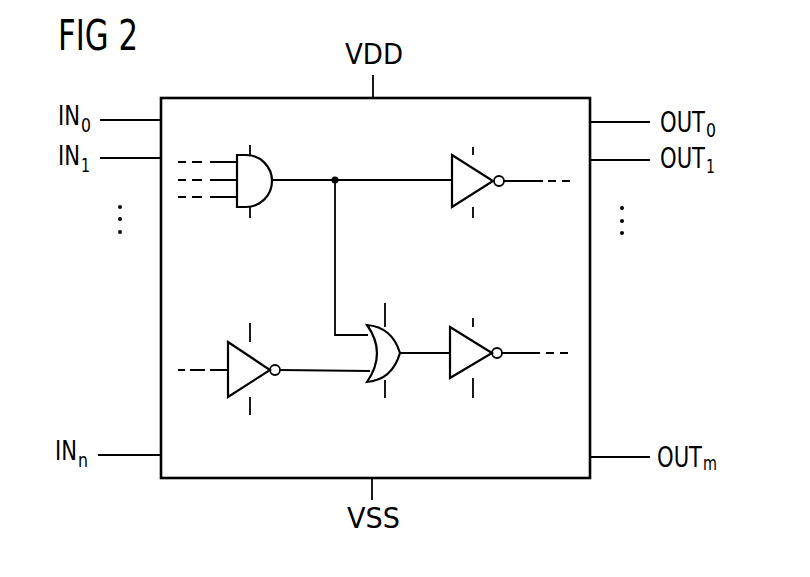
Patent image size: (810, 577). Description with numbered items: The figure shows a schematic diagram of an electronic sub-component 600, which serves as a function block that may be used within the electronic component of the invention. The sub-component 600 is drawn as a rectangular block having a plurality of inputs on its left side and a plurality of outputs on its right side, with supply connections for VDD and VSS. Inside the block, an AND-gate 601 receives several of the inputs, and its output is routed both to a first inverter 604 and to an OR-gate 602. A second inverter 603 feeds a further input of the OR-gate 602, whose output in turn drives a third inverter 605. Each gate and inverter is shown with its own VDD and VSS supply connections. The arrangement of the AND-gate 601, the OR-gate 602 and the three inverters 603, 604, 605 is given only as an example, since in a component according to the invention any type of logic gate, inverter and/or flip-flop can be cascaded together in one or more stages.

The electronic sub-component 600 is at (302, 95).
The AND-gate 601 is at (267, 196).
The OR-gate 602 is at (398, 362).
The inverter 603 is at (260, 383).
The inverter 604 is at (482, 192).
The inverter 605 is at (477, 365).